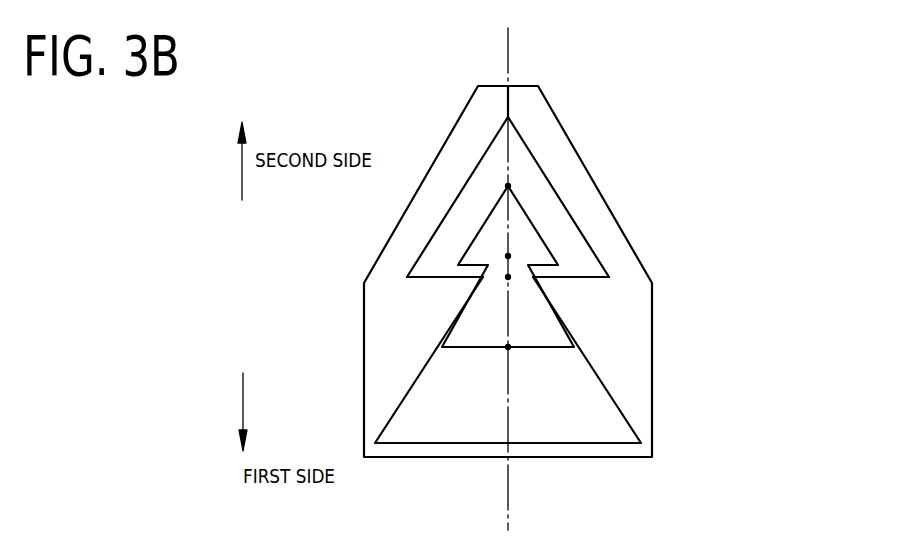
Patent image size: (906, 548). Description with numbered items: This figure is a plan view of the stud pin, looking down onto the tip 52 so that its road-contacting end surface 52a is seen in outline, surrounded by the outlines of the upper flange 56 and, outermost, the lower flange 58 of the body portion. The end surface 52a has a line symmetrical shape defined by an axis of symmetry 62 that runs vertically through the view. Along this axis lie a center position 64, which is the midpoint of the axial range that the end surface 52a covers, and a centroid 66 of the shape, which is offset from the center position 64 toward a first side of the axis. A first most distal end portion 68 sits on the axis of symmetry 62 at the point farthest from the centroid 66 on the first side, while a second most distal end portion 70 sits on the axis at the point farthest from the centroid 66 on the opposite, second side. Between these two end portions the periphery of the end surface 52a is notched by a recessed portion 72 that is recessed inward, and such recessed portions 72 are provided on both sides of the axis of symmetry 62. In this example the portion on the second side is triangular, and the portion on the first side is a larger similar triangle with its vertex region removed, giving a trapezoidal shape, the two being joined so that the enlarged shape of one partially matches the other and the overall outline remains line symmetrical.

The tip 52 is at (552, 253).
The end surface 52a is at (507, 237).
The upper flange 56 is at (552, 183).
The lower flange 58 is at (595, 213).
The axis of symmetry 62 is at (508, 53).
The center position 64 is at (508, 256).
The centroid 66 is at (508, 277).
The first most distal end portion 68 is at (508, 347).
The second most distal end portion 70 is at (508, 186).
The recessed portion 72 is at (466, 275).